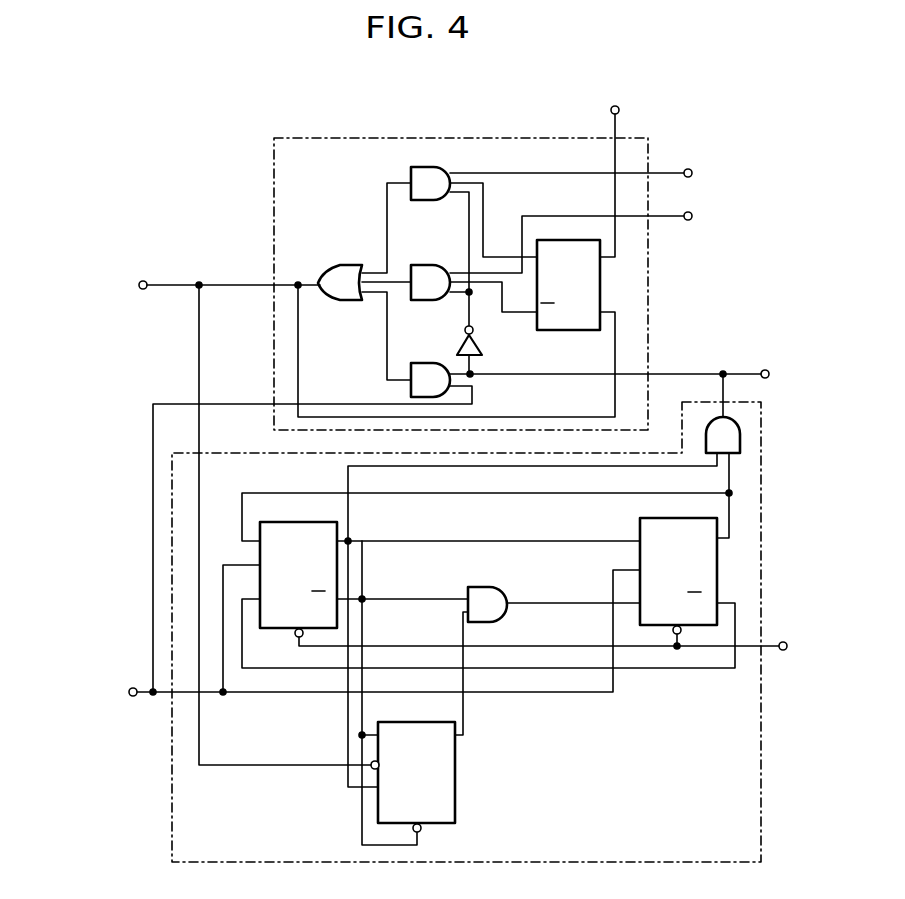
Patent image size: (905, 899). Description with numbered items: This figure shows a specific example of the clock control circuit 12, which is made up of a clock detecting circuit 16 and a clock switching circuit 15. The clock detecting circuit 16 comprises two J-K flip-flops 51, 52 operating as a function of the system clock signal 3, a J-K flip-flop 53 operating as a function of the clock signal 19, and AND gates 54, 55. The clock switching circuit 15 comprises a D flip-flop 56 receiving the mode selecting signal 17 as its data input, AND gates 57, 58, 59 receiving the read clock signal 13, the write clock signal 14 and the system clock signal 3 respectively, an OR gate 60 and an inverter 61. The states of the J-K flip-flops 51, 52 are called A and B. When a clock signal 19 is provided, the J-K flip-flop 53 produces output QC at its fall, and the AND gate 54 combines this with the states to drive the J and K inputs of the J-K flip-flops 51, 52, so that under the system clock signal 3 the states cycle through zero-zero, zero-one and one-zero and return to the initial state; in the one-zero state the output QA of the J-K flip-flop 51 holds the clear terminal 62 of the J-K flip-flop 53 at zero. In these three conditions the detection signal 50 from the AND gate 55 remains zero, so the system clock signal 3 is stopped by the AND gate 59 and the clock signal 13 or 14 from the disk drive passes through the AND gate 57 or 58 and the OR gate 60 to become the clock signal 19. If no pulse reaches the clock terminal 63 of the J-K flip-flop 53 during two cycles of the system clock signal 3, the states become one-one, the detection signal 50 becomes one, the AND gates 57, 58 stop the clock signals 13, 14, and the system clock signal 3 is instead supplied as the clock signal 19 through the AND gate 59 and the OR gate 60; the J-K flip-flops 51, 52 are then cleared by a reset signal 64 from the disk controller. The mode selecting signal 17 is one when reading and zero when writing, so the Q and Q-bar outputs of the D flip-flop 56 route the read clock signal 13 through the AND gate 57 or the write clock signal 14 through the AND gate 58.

The system clock signal 3 is at (88, 688).
The clock control circuit 12 is at (244, 126).
The read clock signal 13 is at (740, 160).
The write clock signal 14 is at (742, 230).
The clock switching circuit 15 is at (621, 285).
The clock detecting circuit 16 is at (762, 520).
The mode selecting signal 17 is at (624, 167).
The clock signal 19 is at (190, 301).
The detection signal 50 is at (616, 360).
The J-K flip-flop 51 is at (293, 522).
The J-K flip-flop 52 is at (640, 520).
The J-K flip-flop 53 is at (455, 768).
The AND gate 54 is at (490, 587).
The AND gate 55 is at (741, 433).
The D flip-flop 56 is at (601, 293).
The AND gate 57 is at (430, 167).
The AND gate 58 is at (418, 265).
The AND gate 59 is at (414, 363).
The OR gate 60 is at (336, 265).
The inverter 61 is at (481, 345).
The clear terminal 62 is at (422, 831).
The clock terminal 63 is at (372, 770).
The reset signal 64 is at (797, 631).